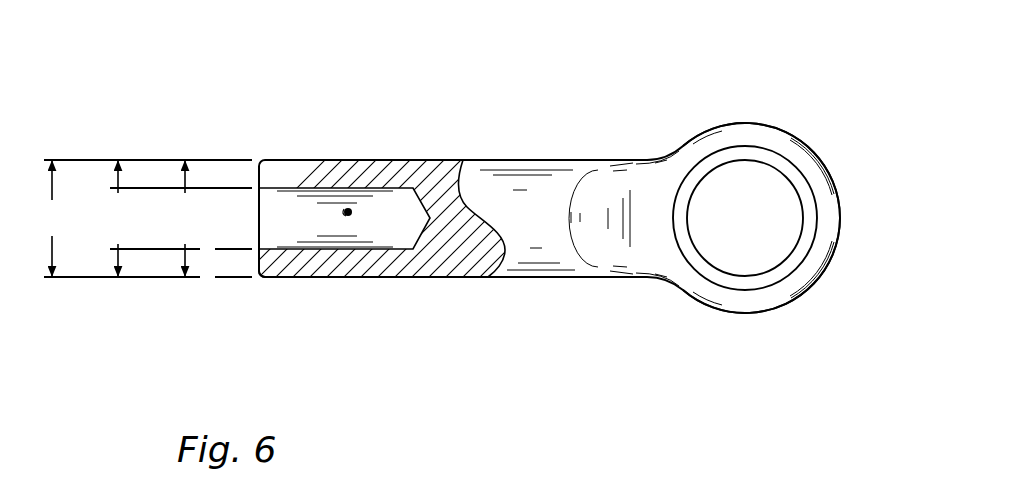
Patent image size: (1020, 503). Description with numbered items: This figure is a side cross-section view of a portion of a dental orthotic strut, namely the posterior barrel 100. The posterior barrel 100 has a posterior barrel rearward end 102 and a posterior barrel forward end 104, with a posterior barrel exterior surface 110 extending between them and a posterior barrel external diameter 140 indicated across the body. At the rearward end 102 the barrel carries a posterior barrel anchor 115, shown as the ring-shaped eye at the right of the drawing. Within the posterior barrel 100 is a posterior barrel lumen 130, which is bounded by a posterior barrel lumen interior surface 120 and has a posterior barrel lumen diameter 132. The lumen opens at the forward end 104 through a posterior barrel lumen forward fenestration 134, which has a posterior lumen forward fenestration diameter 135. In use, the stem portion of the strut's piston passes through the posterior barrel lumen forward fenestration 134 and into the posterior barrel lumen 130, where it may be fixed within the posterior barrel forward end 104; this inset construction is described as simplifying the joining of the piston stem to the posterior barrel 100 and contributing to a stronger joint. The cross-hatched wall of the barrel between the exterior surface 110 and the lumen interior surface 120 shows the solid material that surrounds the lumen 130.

The posterior barrel 100 is at (515, 195).
The posterior barrel rearward end 102 is at (733, 325).
The posterior barrel forward end 104 is at (247, 297).
The posterior barrel exterior surface 110 is at (366, 160).
The posterior barrel anchor 115 is at (728, 263).
The posterior barrel lumen interior surface 120 is at (338, 244).
The posterior barrel lumen 130 is at (346, 211).
The posterior barrel lumen diameter 132 is at (191, 218).
The posterior barrel lumen forward fenestration 134 is at (254, 221).
The posterior lumen forward fenestration diameter 135 is at (176, 218).
The posterior barrel external diameter 140 is at (141, 218).